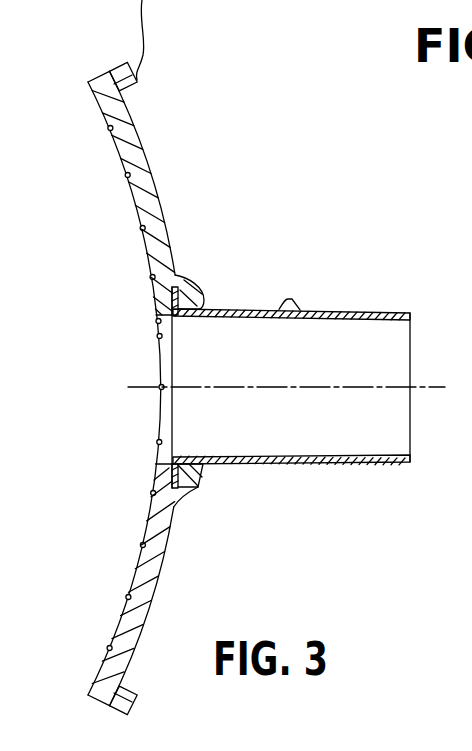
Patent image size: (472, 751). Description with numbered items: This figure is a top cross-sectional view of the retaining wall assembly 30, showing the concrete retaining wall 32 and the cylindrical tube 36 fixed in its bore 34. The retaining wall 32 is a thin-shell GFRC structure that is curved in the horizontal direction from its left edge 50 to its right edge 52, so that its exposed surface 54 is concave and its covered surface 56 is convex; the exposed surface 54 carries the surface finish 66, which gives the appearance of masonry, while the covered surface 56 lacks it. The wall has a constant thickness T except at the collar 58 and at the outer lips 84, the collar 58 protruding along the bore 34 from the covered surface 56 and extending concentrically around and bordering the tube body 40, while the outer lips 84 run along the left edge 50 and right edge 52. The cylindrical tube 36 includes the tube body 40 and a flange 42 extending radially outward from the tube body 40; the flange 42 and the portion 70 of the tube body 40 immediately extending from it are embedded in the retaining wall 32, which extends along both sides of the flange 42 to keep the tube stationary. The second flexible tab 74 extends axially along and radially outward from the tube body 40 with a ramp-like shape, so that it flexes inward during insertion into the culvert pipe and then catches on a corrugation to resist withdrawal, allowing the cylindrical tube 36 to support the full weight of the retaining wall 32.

The retaining wall assembly 30 is at (297, 170).
The concrete retaining wall 32 is at (138, 106).
The bore 34 is at (158, 328).
The cylindrical tube 36 is at (362, 299).
The tube body 40 is at (336, 466).
The flange 42 is at (190, 487).
The left edge 50 is at (107, 70).
The right edge 52 is at (105, 704).
The exposed surface 54 is at (134, 198).
The covered surface 56 is at (156, 190).
The collar 58 is at (203, 292).
The surface finish 66 is at (142, 547).
The portion of the tube body 70 is at (176, 289).
The second flexible tab 74 is at (290, 303).
The outer lips 84 is at (135, 705).